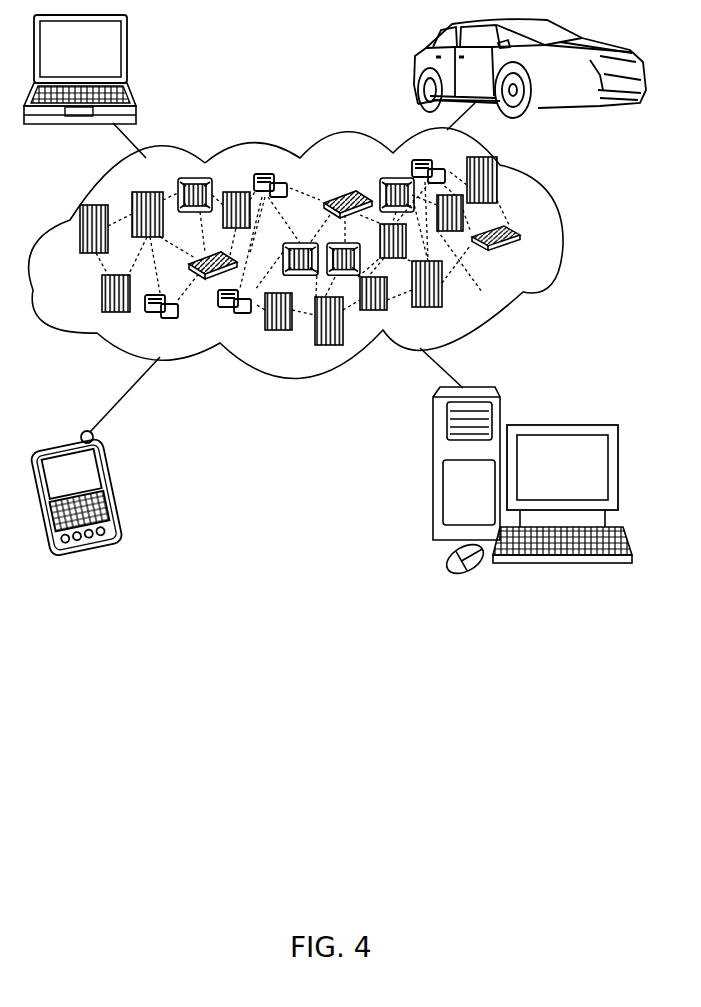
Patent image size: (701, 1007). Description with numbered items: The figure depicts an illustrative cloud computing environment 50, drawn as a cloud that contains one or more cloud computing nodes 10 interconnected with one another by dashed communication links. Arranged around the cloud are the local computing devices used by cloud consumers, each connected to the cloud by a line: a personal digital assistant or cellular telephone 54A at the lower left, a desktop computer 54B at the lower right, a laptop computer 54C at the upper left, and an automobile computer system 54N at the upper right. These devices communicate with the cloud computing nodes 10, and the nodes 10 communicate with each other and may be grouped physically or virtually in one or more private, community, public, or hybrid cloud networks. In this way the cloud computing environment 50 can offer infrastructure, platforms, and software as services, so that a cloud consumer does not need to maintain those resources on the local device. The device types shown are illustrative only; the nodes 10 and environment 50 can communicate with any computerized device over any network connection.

The cloud computing node 10 is at (519, 256).
The cloud computing environment 50 is at (562, 237).
The personal digital assistant or cellular telephone 54A is at (117, 488).
The desktop computer 54B is at (558, 425).
The laptop computer 54C is at (127, 59).
The automobile computer system 54N is at (415, 68).